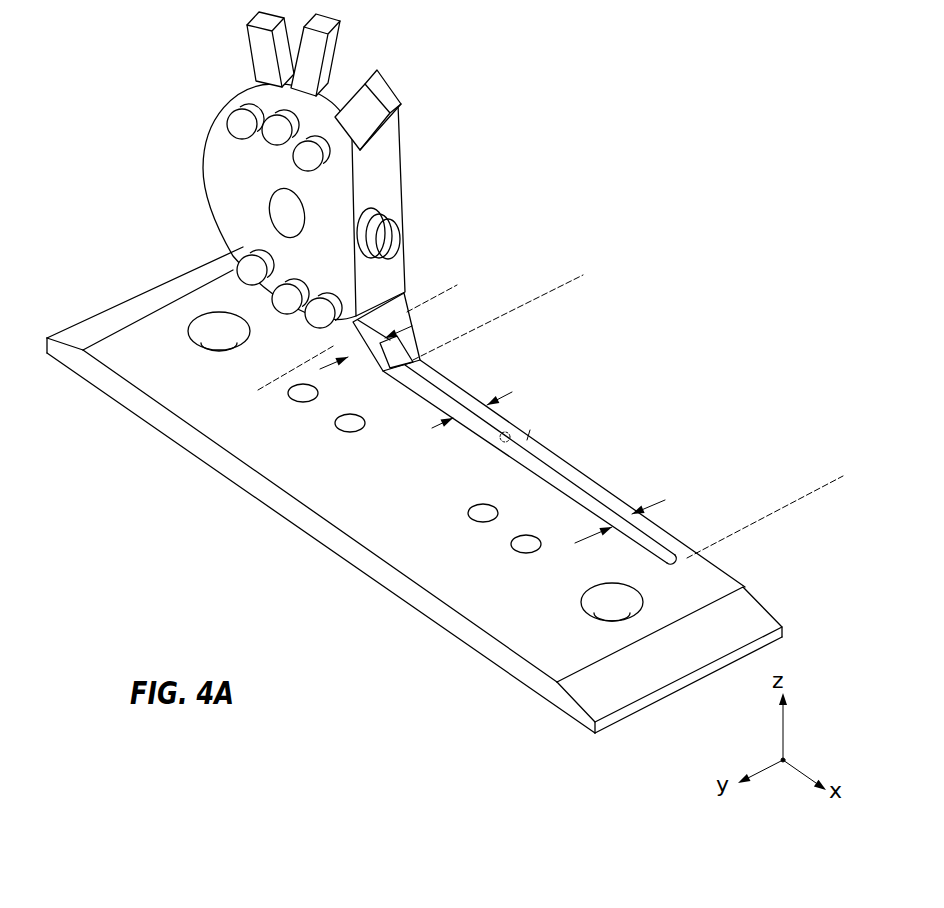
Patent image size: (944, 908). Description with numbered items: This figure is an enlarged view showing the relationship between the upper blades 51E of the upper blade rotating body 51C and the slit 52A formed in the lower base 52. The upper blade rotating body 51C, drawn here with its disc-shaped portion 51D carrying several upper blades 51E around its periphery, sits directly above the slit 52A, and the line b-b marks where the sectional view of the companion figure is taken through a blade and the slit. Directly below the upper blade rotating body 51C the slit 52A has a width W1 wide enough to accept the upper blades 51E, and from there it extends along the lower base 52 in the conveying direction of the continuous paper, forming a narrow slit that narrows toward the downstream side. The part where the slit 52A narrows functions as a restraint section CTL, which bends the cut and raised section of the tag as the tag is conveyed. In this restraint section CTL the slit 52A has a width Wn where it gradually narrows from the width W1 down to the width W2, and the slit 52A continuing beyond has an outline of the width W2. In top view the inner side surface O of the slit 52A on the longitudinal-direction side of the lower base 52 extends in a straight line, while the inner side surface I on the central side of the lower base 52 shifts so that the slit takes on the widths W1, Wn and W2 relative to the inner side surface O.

The upper blade rotating body 51C is at (451, 174).
The disk portion of holder 51D is at (217, 160).
The upper blade 51E is at (328, 33).
The lower base 52 is at (373, 530).
The slit 52A is at (345, 362).
The line b- b is at (449, 289).
The restraint section CTL is at (822, 487).
The width Wn is at (465, 403).
The width W1 is at (368, 368).
The width W2 is at (622, 512).
The inner side surface O is at (515, 437).
The inner side surface I is at (485, 437).